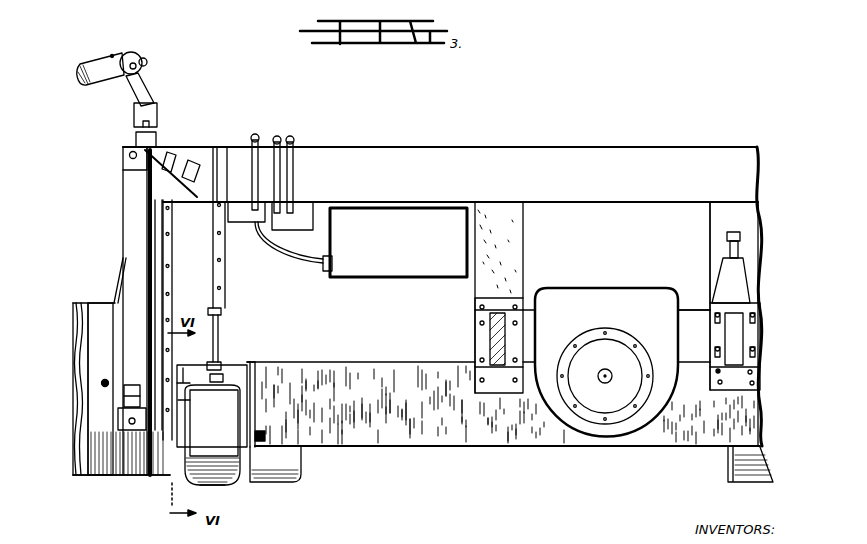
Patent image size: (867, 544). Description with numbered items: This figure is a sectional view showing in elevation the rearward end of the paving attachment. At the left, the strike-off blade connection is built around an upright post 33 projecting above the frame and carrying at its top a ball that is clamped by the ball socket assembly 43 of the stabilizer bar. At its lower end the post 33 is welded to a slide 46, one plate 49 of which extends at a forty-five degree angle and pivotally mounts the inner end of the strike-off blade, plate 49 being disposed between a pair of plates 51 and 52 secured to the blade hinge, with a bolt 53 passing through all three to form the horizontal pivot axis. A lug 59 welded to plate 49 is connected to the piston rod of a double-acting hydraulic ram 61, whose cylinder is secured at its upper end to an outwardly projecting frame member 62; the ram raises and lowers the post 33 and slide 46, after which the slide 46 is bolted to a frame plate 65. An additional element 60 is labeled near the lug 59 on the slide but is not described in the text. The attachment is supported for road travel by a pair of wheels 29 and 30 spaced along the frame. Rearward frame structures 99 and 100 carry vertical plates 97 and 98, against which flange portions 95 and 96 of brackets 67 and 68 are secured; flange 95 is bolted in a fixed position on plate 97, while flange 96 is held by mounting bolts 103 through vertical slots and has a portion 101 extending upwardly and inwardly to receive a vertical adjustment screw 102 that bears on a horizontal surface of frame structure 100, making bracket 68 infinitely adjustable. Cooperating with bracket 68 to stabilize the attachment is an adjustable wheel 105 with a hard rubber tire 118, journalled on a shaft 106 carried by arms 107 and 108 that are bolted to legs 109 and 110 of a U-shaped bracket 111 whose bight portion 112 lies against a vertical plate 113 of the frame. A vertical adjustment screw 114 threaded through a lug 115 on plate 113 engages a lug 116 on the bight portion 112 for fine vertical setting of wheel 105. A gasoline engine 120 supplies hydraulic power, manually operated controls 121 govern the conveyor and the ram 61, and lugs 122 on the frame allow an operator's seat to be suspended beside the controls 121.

The ball socket assembly 43 is at (126, 53).
The upright post 33 is at (157, 118).
The outwardly projecting frame member 62 is at (200, 152).
The lugs 122 is at (173, 153).
The manually operated controls 121 is at (281, 137).
The double-acting hydraulic ram 61 is at (130, 182).
The third plate 49 is at (117, 293).
The plate 52 is at (96, 307).
The plate 51 is at (76, 323).
The bolt 53 is at (102, 383).
The block 60 is at (133, 397).
The lug 59 is at (118, 420).
The slide 46 is at (116, 478).
The frame plate 65 is at (166, 476).
The vertical adjustment screw 114 is at (230, 303).
The bight portion 112 is at (222, 348).
The lug 115 is at (222, 365).
The U-shaped bracket 111 is at (258, 361).
The leg 110 is at (256, 372).
The arm 108 is at (252, 400).
The vertical plate 113 is at (300, 416).
The shaft 106 is at (266, 438).
The hard rubber tire 118 is at (205, 485).
The arm 107 is at (180, 442).
The leg 109 is at (178, 414).
The lug 116 is at (212, 382).
The adjustable wheel 105 is at (239, 484).
The wheel 29 is at (307, 466).
The bracket 67 is at (470, 338).
The flange portion 95 is at (476, 318).
The vertical plate 97 is at (510, 305).
The frame structure 99 is at (515, 238).
The frame structure 100 is at (718, 212).
The gasoline engine 120 is at (638, 295).
The bracket 68 is at (706, 325).
The vertical adjustment screw 102 is at (740, 243).
The portion 101 is at (742, 283).
The mounting bolts 103 is at (756, 354).
The flange portion 96 is at (716, 350).
The vertical plate 98 is at (733, 384).
The wheel 30 is at (726, 462).